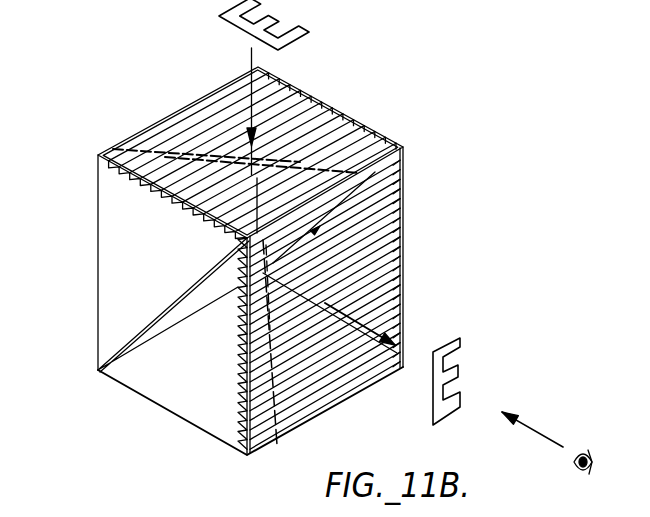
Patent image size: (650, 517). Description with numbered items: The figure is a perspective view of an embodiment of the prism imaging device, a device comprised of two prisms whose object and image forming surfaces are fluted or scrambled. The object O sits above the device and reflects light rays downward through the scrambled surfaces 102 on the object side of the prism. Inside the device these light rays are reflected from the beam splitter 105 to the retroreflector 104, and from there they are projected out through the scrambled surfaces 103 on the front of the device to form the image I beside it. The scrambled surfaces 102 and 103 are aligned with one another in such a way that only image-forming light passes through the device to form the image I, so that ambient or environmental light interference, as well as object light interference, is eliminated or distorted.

The object O is at (297, 29).
The image I is at (460, 349).
The scrambled surfaces 102 is at (130, 189).
The scrambled surfaces 103 is at (239, 417).
The retroreflector 104 is at (98, 247).
The beam splitter 105 is at (140, 331).